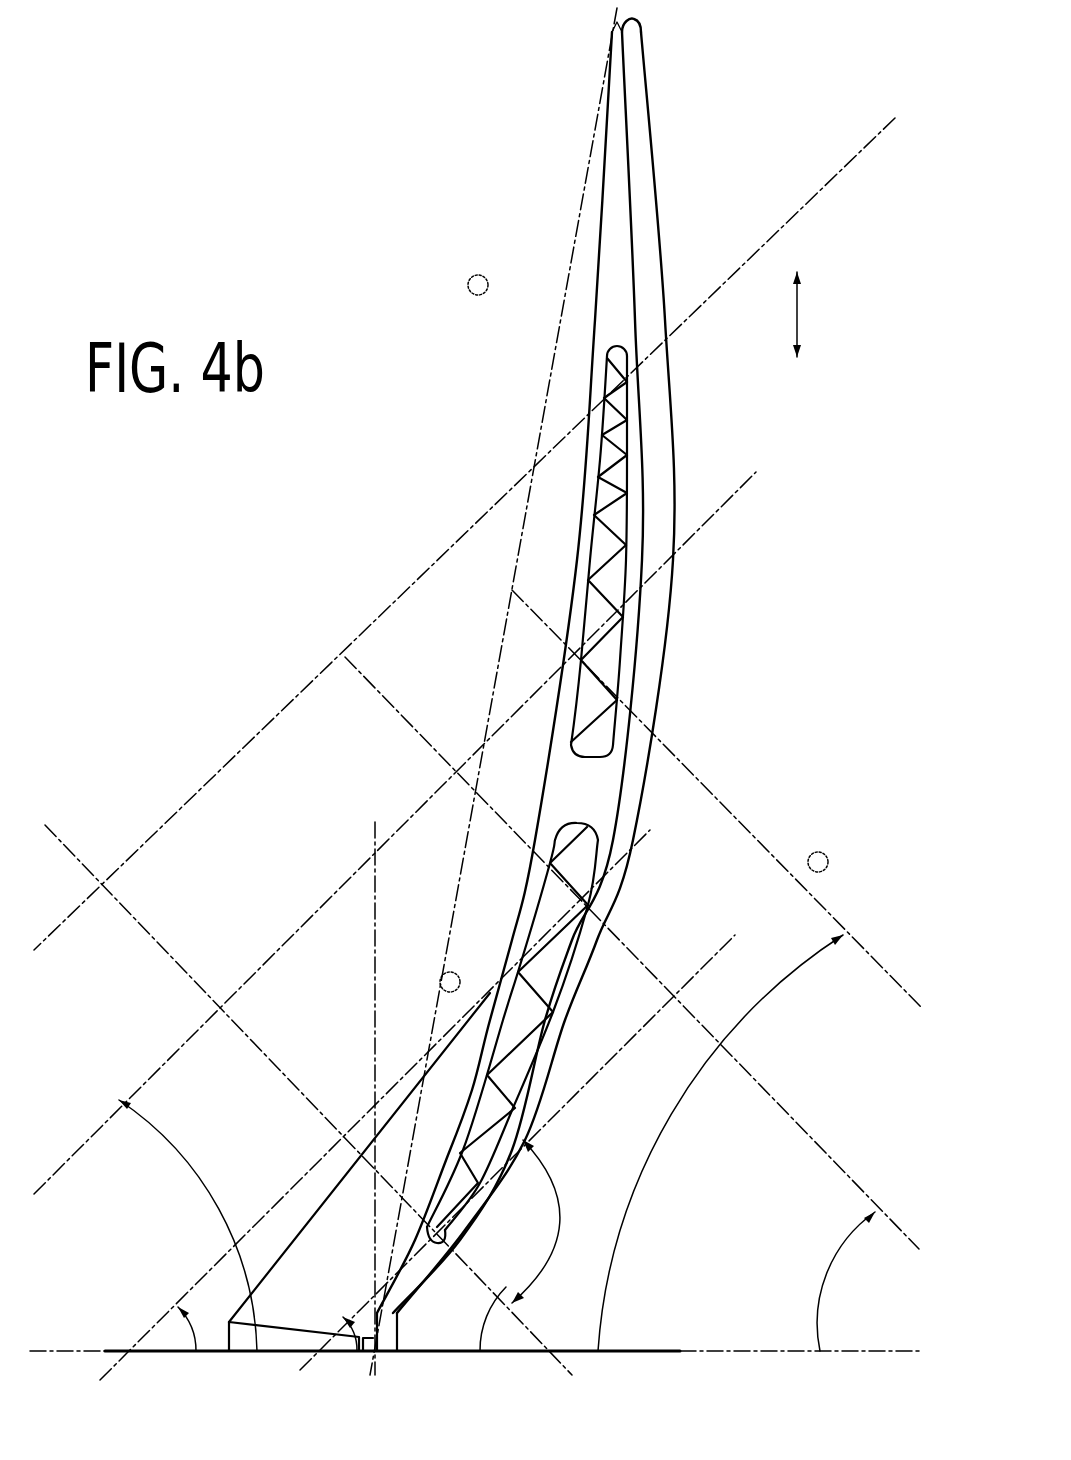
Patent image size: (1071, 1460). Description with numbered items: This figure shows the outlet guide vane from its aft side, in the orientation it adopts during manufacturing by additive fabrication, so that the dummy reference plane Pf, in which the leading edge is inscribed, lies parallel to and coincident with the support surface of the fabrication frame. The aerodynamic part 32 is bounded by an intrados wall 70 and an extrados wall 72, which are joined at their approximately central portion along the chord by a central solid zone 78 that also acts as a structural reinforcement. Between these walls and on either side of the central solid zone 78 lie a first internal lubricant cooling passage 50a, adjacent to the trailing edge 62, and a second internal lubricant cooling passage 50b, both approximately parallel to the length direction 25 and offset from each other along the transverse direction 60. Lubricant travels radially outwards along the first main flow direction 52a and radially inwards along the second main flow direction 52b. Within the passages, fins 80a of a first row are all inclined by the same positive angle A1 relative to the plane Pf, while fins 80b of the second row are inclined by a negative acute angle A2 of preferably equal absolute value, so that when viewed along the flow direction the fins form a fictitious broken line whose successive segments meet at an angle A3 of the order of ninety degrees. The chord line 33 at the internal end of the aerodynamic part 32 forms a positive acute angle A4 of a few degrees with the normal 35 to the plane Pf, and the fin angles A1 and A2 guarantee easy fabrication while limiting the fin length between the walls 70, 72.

The aerodynamic part 32 is at (690, 155).
The chord line 33 is at (590, 153).
The normal to the dummy plane 35 is at (374, 960).
The trailing edge 62 is at (613, 33).
The extrados wall 72 is at (633, 805).
The central solid zone 78 is at (593, 777).
The intrados wall 70 is at (538, 880).
The first internal lubricant cooling passage 50a is at (612, 381).
The second internal lubricant cooling passage 50b is at (533, 1004).
The first main flow direction 52a is at (473, 277).
The second main flow direction 52b is at (447, 973).
The fins of the first row 80a is at (792, 401).
The fins of the second row 80b is at (500, 358).
The transverse direction 60 is at (803, 330).
The length direction 25 is at (816, 852).
The positive angle A1 is at (632, 1192).
The negative acute angle A2 is at (221, 1207).
The angle between successive fin segments A3 is at (560, 1252).
The positive acute angle A4 is at (432, 1034).
The dummy plane Pf is at (746, 1351).